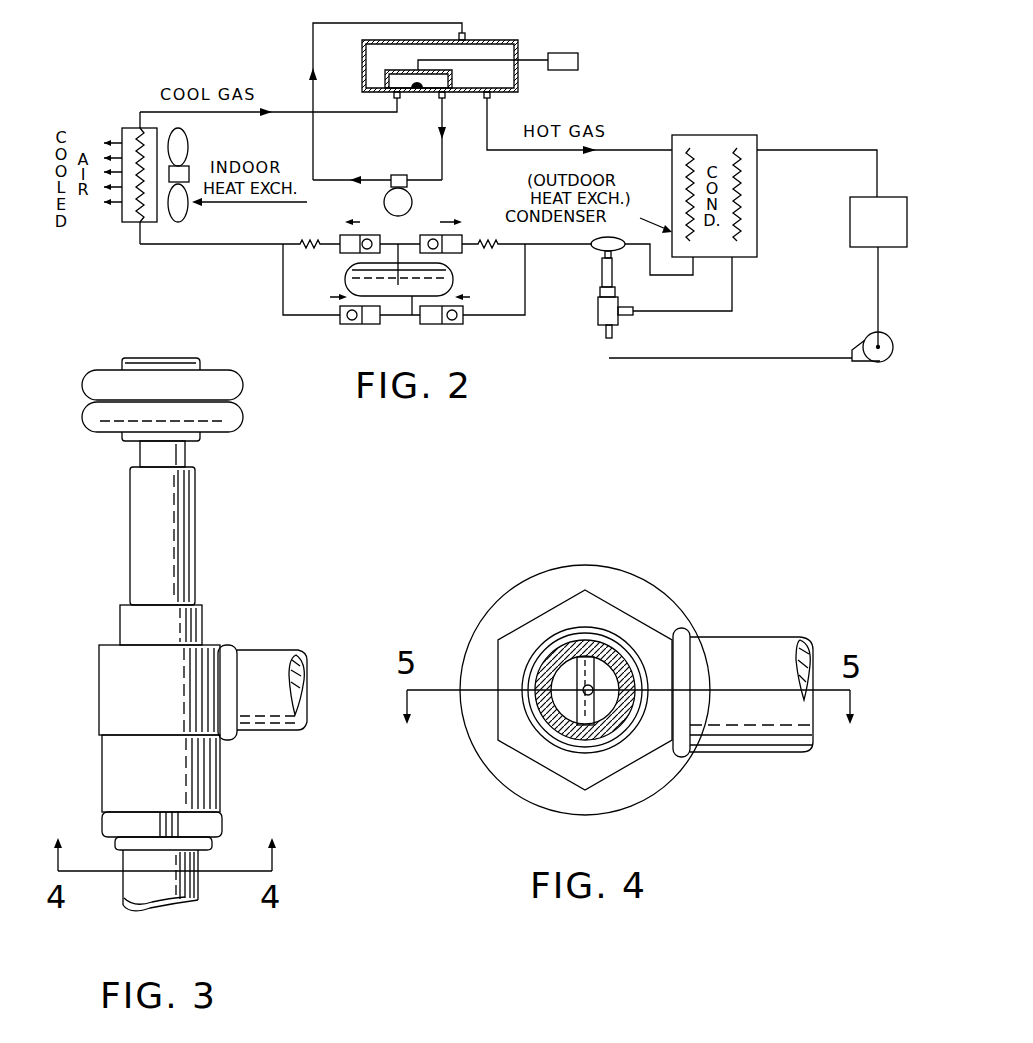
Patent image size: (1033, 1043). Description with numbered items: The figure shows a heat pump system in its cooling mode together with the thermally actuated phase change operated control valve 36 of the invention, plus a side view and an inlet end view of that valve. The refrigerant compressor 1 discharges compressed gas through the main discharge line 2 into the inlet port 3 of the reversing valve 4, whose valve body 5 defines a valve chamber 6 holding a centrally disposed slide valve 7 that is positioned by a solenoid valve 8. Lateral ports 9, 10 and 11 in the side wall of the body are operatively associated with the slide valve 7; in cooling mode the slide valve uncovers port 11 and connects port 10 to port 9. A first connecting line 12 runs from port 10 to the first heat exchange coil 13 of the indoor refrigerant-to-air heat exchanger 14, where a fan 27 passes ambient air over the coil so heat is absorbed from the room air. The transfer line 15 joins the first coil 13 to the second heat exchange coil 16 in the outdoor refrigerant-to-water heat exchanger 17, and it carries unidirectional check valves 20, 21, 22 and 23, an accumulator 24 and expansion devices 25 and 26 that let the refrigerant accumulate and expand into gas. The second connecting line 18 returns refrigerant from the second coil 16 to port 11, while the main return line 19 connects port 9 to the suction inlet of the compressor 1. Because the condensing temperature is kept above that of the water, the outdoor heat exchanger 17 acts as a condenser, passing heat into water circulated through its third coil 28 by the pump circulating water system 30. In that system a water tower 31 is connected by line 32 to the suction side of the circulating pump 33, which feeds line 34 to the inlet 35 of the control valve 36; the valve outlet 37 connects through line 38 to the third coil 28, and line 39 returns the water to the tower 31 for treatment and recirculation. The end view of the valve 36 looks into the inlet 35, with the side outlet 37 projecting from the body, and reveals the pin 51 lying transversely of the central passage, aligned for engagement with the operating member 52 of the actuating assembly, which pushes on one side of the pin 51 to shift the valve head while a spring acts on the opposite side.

In FIG. 2, the refrigerant compressor 1 is at (412, 203).
In FIG. 2, the main discharge line 2 is at (313, 148).
In FIG. 2, the inlet port 3 is at (468, 37).
In FIG. 2, the reversing valve 4 is at (522, 44).
In FIG. 2, the valve body 5 is at (500, 42).
In FIG. 2, the valve chamber 6 is at (490, 83).
In FIG. 2, the slide valve 7 is at (408, 70).
In FIG. 2, the solenoid valve 8 is at (570, 70).
In FIG. 2, the port 9 is at (446, 98).
In FIG. 2, the port 10 is at (402, 97).
In FIG. 2, the port 11 is at (492, 98).
In FIG. 2, the first connecting line 12 is at (293, 110).
In FIG. 2, the first heat exchange coil 13 is at (137, 148).
In FIG. 2, the indoor refrigerant-to-air heat exchanger 14 is at (125, 229).
In FIG. 2, the transfer line 15 is at (574, 246).
In FIG. 2, the second heat exchange coil 16 is at (690, 181).
In FIG. 2, the outdoor refrigerant-to-water heat exchanger 17 is at (725, 134).
In FIG. 2, the second connecting line 18 is at (641, 148).
In FIG. 2, the main return line 19 is at (443, 160).
In FIG. 2, the unidirectional check valve 20 is at (350, 253).
In FIG. 2, the unidirectional check valve 21 is at (358, 324).
In FIG. 2, the unidirectional check valve 22 is at (451, 253).
In FIG. 2, the unidirectional check valve 23 is at (440, 324).
In FIG. 2, the accumulator 24 is at (455, 282).
In FIG. 2, the expansion device 25 is at (302, 240).
In FIG. 2, the expansion device 26 is at (487, 238).
In FIG. 2, the fan 27 is at (182, 147).
In FIG. 2, the third coil 28 is at (737, 180).
In FIG. 2, the pump circulating water system 30 is at (810, 365).
In FIG. 2, the water tower 31 is at (857, 229).
In FIG. 2, the line 32 is at (880, 292).
In FIG. 2, the circulating pump 33 is at (887, 362).
In FIG. 2, the line 34 is at (718, 357).
In FIG. 2, the inlet 35 is at (604, 333).
In FIG. 3, the inlet 35 is at (183, 883).
In FIG. 4, the inlet 35 is at (560, 660).
In FIG. 2, the thermally actuated phase change operated control valve 36 is at (596, 315).
In FIG. 3, the thermally actuated phase change operated control valve 36 is at (222, 777).
In FIG. 4, the thermally actuated phase change operated control valve 36 is at (657, 606).
In FIG. 2, the outlet 37 is at (628, 315).
In FIG. 3, the outlet 37 is at (257, 672).
In FIG. 4, the outlet 37 is at (748, 650).
In FIG. 2, the line 38 is at (735, 283).
In FIG. 2, the line 39 is at (814, 150).
In FIG. 4, the pin 51 is at (580, 712).
In FIG. 4, the operating member 52 is at (582, 690).